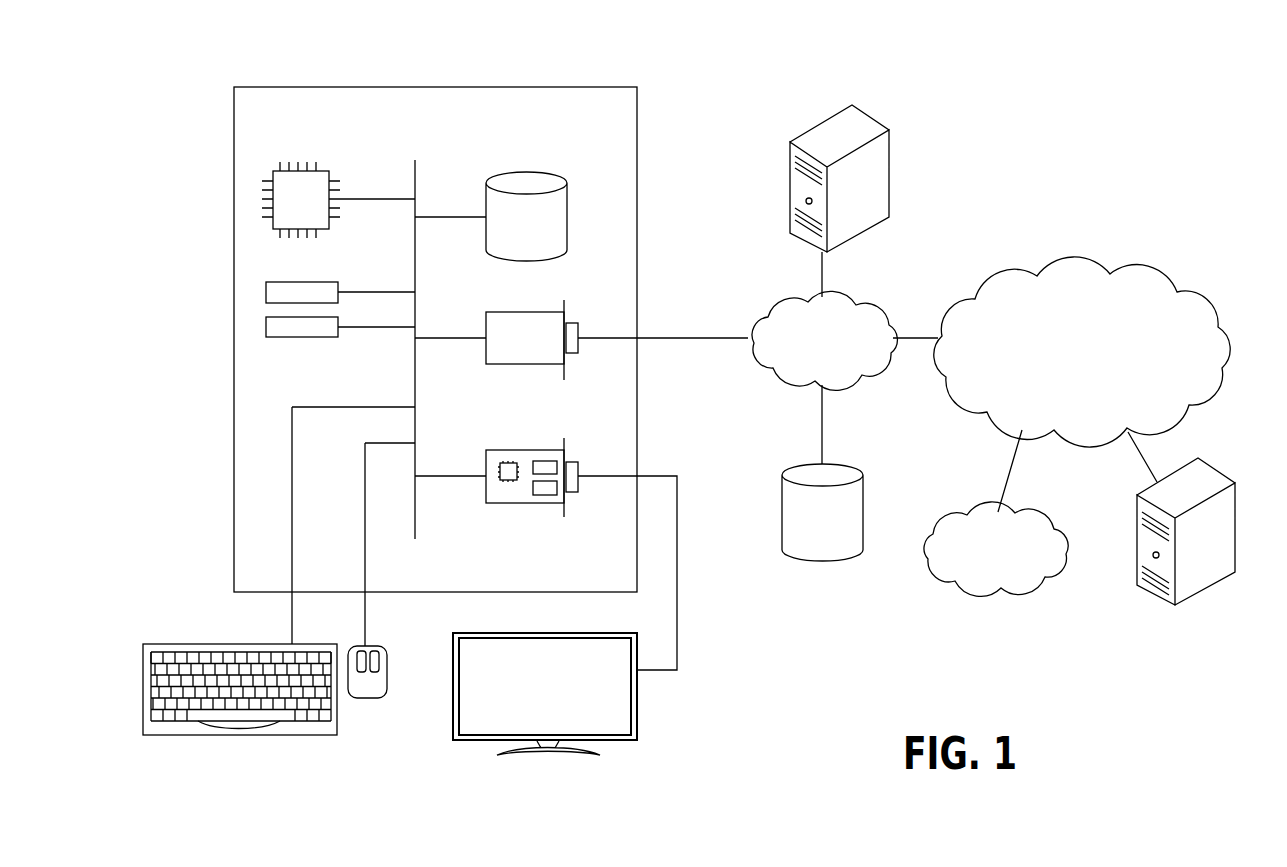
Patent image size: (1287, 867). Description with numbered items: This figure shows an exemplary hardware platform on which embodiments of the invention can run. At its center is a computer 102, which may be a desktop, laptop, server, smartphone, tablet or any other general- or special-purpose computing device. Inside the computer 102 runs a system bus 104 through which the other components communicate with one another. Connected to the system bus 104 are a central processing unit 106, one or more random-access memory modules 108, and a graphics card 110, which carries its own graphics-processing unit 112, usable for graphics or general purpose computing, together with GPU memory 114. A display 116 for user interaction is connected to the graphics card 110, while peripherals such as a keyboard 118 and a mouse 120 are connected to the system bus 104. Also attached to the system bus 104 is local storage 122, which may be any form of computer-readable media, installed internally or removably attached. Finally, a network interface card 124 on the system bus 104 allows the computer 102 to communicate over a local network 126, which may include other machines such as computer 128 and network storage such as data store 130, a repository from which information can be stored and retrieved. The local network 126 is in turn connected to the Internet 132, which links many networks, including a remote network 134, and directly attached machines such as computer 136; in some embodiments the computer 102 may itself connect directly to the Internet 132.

The computer 102 is at (592, 87).
The system bus 104 is at (417, 172).
The central processing unit 106 is at (325, 171).
The random-access memory modules 108 is at (338, 291).
The graphics card 110 is at (546, 540).
The graphics-processing unit 112 is at (507, 481).
The GPU memory 114 is at (543, 495).
The display 116 is at (640, 721).
The keyboard 118 is at (243, 737).
The mouse 120 is at (367, 700).
The local storage 122 is at (568, 200).
The network interface card 124 is at (486, 322).
The local network 126 is at (878, 297).
The computer 128 is at (878, 115).
The data store 130 is at (855, 465).
The Internet 132 is at (1125, 262).
The remote network 134 is at (1050, 510).
The computer 136 is at (1218, 468).